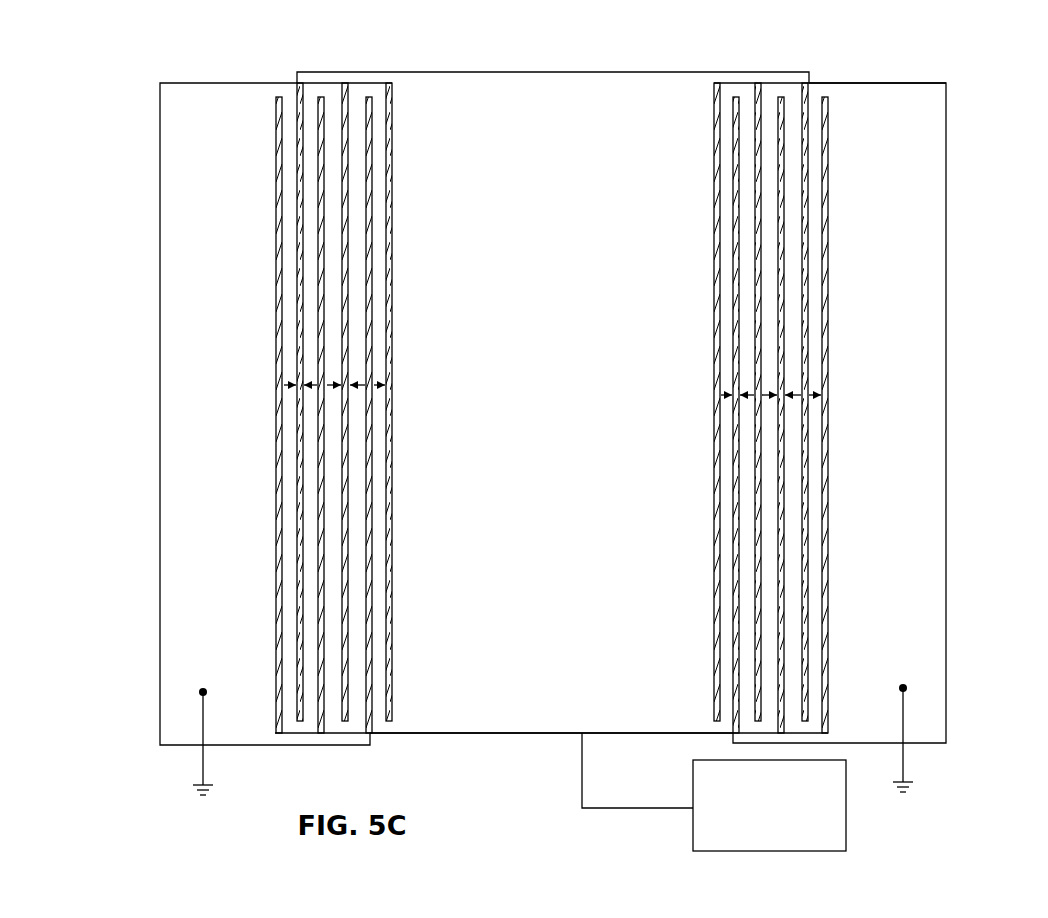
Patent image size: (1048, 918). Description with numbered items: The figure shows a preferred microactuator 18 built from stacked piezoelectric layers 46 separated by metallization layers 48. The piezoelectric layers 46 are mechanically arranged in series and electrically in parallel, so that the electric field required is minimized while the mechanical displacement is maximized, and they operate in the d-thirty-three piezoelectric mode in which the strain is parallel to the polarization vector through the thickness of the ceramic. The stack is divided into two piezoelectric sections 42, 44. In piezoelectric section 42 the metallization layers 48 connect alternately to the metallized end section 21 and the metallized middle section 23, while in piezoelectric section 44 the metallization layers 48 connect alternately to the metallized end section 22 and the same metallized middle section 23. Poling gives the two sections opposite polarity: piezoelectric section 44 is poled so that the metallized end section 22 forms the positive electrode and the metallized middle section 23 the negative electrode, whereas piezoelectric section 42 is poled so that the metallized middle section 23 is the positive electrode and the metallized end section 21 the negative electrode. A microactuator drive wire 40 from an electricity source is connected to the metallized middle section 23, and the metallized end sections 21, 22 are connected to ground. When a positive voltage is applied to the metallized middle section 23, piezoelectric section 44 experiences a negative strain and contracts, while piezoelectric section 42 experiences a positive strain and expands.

The microactuator 18 is at (101, 394).
The metallized end section 21 is at (170, 168).
The metallized end section 22 is at (940, 478).
The metallized middle section 23 is at (500, 735).
The microactuator drive wire 40 is at (637, 810).
The piezoelectric section 42 is at (290, 68).
The piezoelectric section 44 is at (823, 71).
The piezoelectric layers 46 is at (286, 113).
The metallization layers 48 is at (298, 100).